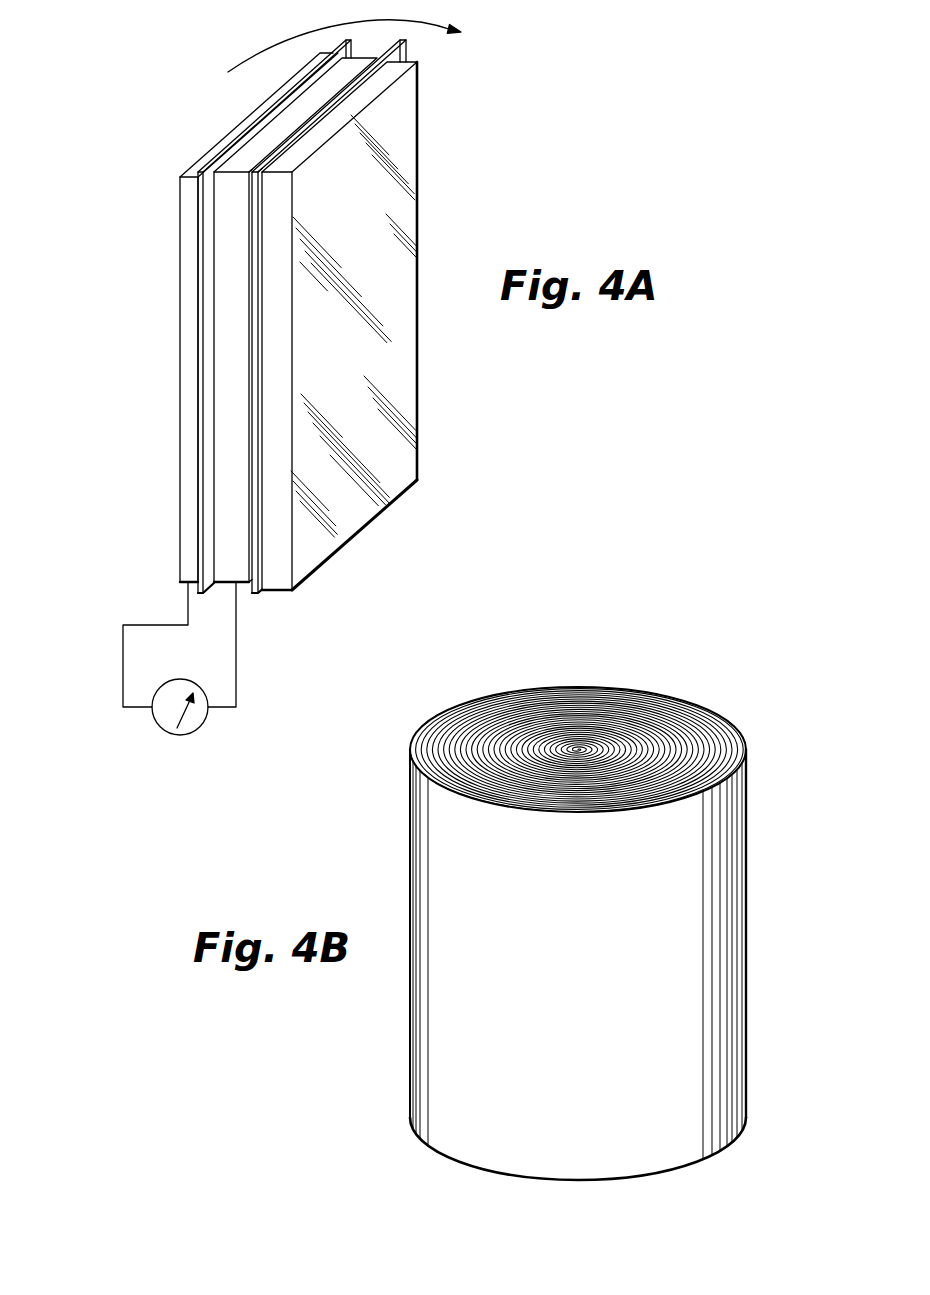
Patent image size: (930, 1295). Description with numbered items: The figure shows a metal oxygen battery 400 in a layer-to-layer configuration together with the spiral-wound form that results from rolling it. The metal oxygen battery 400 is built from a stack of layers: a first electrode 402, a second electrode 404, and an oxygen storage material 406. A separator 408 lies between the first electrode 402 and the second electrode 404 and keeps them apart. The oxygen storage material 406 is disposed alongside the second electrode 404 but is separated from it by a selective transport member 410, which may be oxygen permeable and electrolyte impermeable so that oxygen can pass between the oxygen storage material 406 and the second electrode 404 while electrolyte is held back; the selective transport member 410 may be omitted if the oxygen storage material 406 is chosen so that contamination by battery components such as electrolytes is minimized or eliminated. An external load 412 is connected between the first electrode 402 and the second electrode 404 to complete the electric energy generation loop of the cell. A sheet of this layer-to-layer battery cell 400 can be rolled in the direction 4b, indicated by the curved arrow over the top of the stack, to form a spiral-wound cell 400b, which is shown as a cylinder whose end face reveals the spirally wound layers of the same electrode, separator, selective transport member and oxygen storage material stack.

In FIG. 4A, the rolling direction 4b is at (277, 43).
In FIG. 4A, the metal oxygen battery 400 is at (288, 340).
In FIG. 4A, the first electrode 402 is at (178, 392).
In FIG. 4A, the second electrode 404 is at (228, 267).
In FIG. 4A, the oxygen storage material 406 is at (355, 355).
In FIG. 4A, the separator 408 is at (200, 430).
In FIG. 4A, the selective transport member 410 is at (258, 517).
In FIG. 4A, the external load 412 is at (158, 741).
In FIG. 4B, the spiral-wound cell 400b is at (702, 1195).